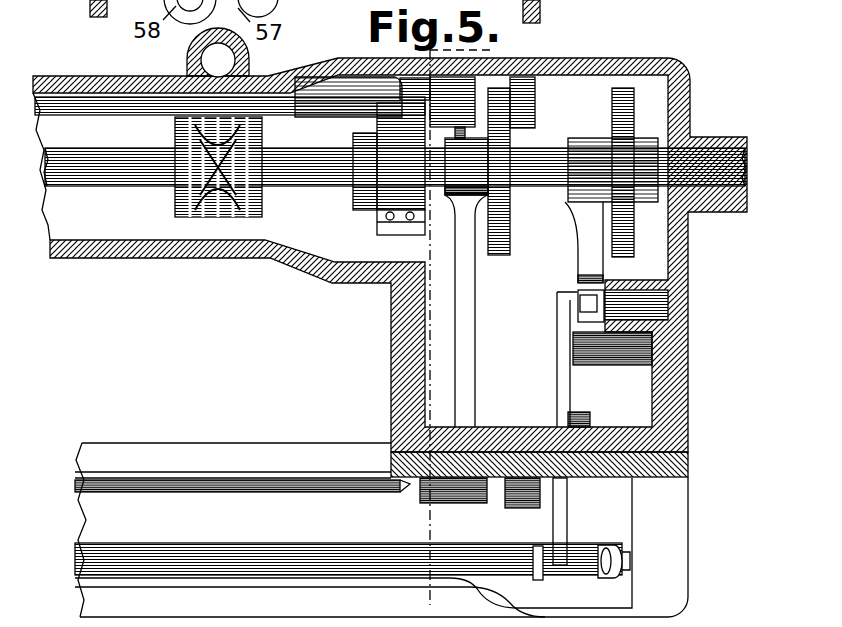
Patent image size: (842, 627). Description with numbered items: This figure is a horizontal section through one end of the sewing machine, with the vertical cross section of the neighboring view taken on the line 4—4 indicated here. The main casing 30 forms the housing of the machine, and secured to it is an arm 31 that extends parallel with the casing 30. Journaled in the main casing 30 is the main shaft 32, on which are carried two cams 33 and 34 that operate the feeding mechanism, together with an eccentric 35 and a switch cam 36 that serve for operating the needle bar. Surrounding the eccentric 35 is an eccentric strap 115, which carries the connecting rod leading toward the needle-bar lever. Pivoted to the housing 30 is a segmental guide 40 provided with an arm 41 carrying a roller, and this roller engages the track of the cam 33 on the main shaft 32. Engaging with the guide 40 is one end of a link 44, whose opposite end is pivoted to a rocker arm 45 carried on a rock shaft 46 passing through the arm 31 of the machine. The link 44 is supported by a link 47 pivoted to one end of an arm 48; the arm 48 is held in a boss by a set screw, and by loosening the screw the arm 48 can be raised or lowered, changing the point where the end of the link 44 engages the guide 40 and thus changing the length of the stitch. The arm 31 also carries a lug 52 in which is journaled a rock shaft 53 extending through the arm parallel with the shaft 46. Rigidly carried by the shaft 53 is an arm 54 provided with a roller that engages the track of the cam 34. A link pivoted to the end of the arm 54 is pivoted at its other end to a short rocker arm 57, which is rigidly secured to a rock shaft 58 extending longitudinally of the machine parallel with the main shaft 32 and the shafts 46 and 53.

The section line 4— 4 is at (471, 321).
The main casing 30 is at (583, 73).
The arm 31 is at (381, 530).
The main shaft 32 is at (100, 165).
The cam 33 is at (625, 128).
The cam 34 is at (497, 248).
The eccentric 35 is at (366, 170).
The switch cam 36 is at (262, 206).
The segmental guide 40 is at (582, 310).
The arm 41 is at (592, 243).
The link 44 is at (570, 381).
The rocker arm 45 is at (545, 548).
The rock shaft 46 is at (284, 558).
The link 47 is at (580, 427).
The arm 48 is at (573, 385).
The lug 52 is at (540, 497).
The rock shaft 53 is at (180, 482).
The arm 54 is at (462, 340).
The short rocker arm 57 is at (455, 127).
The rock shaft 58 is at (78, 100).
The eccentric strap 115 is at (393, 135).